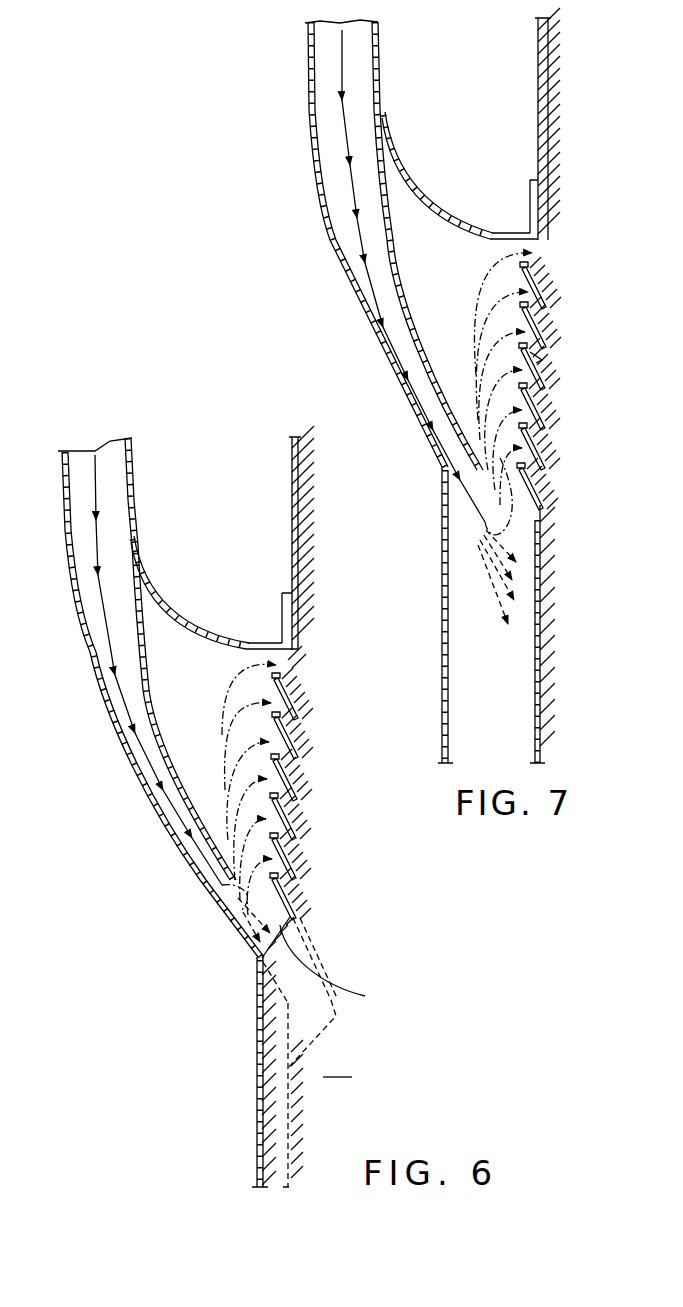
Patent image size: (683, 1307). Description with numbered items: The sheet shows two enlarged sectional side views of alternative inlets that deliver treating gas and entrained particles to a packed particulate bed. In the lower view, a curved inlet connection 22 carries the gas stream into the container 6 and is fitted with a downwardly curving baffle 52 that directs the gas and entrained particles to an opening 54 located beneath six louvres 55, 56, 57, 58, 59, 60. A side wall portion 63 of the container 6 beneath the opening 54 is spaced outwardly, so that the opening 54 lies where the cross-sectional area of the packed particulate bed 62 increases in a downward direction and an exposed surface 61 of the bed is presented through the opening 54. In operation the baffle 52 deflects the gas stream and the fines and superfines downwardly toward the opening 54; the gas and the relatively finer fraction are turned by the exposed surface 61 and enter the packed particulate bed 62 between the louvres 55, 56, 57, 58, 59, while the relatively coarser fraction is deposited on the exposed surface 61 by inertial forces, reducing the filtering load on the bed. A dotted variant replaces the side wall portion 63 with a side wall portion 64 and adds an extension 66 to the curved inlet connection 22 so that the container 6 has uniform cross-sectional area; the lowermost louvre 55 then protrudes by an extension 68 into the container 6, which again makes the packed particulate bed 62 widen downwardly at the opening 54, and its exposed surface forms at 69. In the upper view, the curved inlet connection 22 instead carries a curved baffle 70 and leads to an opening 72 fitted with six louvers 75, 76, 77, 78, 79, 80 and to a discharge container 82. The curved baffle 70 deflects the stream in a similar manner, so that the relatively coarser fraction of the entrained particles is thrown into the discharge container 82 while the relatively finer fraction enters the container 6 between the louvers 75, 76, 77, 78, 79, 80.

In FIG. 7, the container 6 is at (540, 80).
In FIG. 6, the container 6 is at (292, 492).
In FIG. 7, the curved inlet connection 22 is at (328, 246).
In FIG. 6, the curved inlet connection 22 is at (128, 472).
In FIG. 7, the curved baffle 70 is at (376, 186).
In FIG. 6, the downwardly curving baffle 52 is at (140, 660).
In FIG. 6, the opening 54 is at (290, 915).
In FIG. 6, the louvre 55 is at (292, 905).
In FIG. 6, the louvre 56 is at (290, 862).
In FIG. 6, the louvre 57 is at (290, 822).
In FIG. 6, the louvre 58 is at (291, 780).
In FIG. 6, the louvre 59 is at (292, 740).
In FIG. 6, the louvre 60 is at (292, 700).
In FIG. 6, the exposed surface 61 is at (365, 996).
In FIG. 6, the packed particulate bed 62 is at (337, 1066).
In FIG. 6, the side wall portion 63 is at (257, 1058).
In FIG. 6, the side wall portion 64 is at (285, 1128).
In FIG. 6, the extension 66 is at (262, 1005).
In FIG. 6, the extension 68 is at (330, 970).
In FIG. 6, the exposed surface 69 is at (336, 1016).
In FIG. 7, the opening 72 is at (546, 357).
In FIG. 7, the louver 75 is at (538, 488).
In FIG. 7, the louver 76 is at (540, 450).
In FIG. 7, the louver 77 is at (540, 410).
In FIG. 7, the louver 78 is at (540, 368).
In FIG. 7, the louver 79 is at (541, 330).
In FIG. 7, the louver 80 is at (544, 290).
In FIG. 7, the discharge container 82 is at (443, 594).